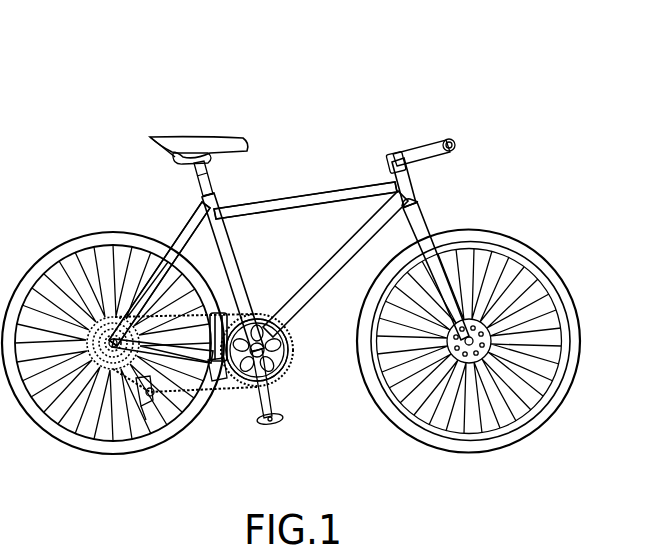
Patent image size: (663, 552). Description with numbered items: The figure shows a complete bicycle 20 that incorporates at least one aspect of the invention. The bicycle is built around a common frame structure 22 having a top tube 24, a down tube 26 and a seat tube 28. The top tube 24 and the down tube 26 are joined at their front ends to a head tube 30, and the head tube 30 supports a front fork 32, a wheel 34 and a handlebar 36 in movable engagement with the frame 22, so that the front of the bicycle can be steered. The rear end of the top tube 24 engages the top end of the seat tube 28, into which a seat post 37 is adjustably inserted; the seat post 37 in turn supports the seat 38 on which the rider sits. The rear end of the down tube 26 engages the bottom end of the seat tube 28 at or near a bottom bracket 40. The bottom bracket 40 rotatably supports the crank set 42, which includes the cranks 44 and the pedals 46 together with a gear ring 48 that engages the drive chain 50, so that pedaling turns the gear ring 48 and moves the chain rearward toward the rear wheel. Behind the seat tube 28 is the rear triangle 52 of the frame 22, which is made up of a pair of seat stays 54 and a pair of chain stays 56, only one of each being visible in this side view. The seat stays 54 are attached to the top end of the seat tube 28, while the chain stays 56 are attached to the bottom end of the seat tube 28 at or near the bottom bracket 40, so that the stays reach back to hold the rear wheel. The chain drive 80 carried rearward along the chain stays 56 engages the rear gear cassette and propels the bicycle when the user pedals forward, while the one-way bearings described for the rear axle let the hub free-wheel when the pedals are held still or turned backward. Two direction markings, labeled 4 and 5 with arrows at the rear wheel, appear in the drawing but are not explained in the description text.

The bicycle 20 is at (352, 125).
The frame structure 22 is at (298, 180).
The top tube 24 is at (332, 186).
The down tube 26 is at (333, 276).
The seat tube 28 is at (246, 262).
The head tube 30 is at (416, 192).
The front fork 32 is at (432, 228).
The wheel 34 is at (537, 246).
The handlebar 36 is at (424, 140).
The seat post 37 is at (219, 186).
The seat 38 is at (192, 135).
The bottom bracket 40 is at (294, 362).
The crank set 42 is at (237, 385).
The cranks 44 is at (257, 405).
The pedals 46 is at (285, 420).
The gear ring 48 is at (268, 312).
The drive chain 50 is at (178, 405).
The rear triangle 52 is at (180, 212).
The seat stays 54 is at (178, 237).
The chain stays 56 is at (165, 353).
The chain drive 80 is at (250, 292).
The direction 4 is at (130, 300).
The direction 5 is at (113, 397).